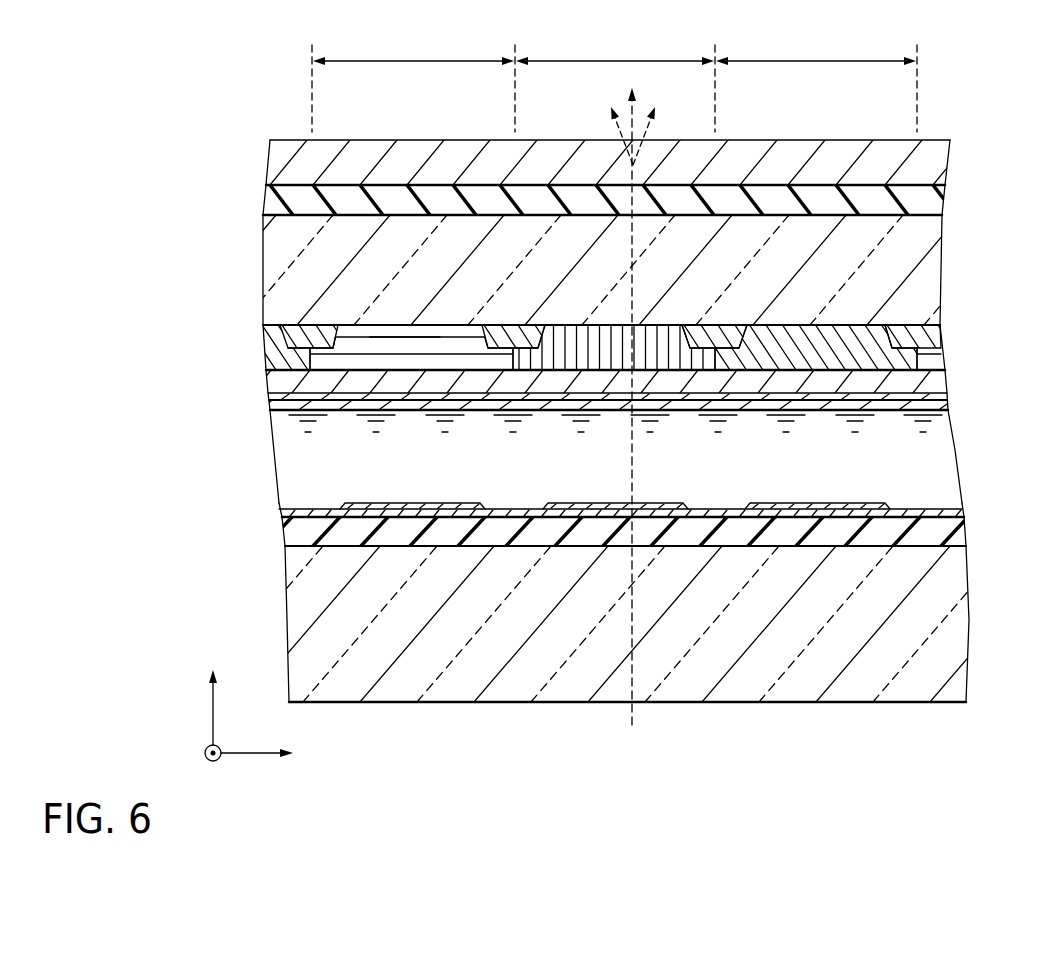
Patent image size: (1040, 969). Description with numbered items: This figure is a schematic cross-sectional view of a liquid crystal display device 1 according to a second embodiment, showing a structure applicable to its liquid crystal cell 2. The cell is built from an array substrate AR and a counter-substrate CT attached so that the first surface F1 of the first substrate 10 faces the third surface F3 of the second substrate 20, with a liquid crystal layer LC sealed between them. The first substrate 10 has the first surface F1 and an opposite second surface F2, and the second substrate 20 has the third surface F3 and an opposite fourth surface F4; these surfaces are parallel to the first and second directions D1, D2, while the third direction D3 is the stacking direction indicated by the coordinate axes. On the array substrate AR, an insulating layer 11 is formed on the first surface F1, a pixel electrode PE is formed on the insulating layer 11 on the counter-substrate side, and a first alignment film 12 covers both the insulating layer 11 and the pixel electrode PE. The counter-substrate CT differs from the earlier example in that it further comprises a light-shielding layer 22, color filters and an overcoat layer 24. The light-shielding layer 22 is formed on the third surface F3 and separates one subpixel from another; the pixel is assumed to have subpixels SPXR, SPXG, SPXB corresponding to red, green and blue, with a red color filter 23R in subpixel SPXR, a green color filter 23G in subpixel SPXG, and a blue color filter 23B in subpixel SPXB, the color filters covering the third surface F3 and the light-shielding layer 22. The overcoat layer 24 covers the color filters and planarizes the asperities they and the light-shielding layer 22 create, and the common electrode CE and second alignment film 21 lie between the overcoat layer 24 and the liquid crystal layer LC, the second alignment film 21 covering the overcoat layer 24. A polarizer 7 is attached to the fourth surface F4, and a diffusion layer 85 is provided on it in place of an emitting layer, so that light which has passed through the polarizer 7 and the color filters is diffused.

The liquid crystal display device 1 is at (965, 95).
The liquid crystal cell 2 is at (205, 405).
The polarizer 7 is at (940, 202).
The first substrate 10 is at (957, 617).
The insulating layer 11 is at (957, 532).
The first alignment film 12 is at (957, 512).
The second substrate 20 is at (930, 288).
The second alignment film 21 is at (947, 410).
The light-shielding layer 22 is at (512, 337).
The red color filter 23R is at (447, 340).
The green color filter 23G is at (665, 340).
The blue color filter 23B is at (827, 340).
The overcoat layer 24 is at (937, 380).
The diffusion layer 85 is at (935, 161).
The pixel electrode PE is at (860, 514).
The common electrode CE is at (947, 397).
The liquid crystal layer LC is at (290, 467).
The counter-substrate CT is at (257, 369).
The array substrate AR is at (277, 538).
The red subpixel SPXR is at (413, 82).
The green subpixel SPXG is at (615, 82).
The blue subpixel SPXB is at (816, 82).
The first surface F1 is at (722, 545).
The second surface F2 is at (777, 705).
The third surface F3 is at (402, 338).
The fourth surface F4 is at (375, 207).
The first direction D1 is at (272, 755).
The second direction D2 is at (200, 766).
The third direction D3 is at (214, 693).